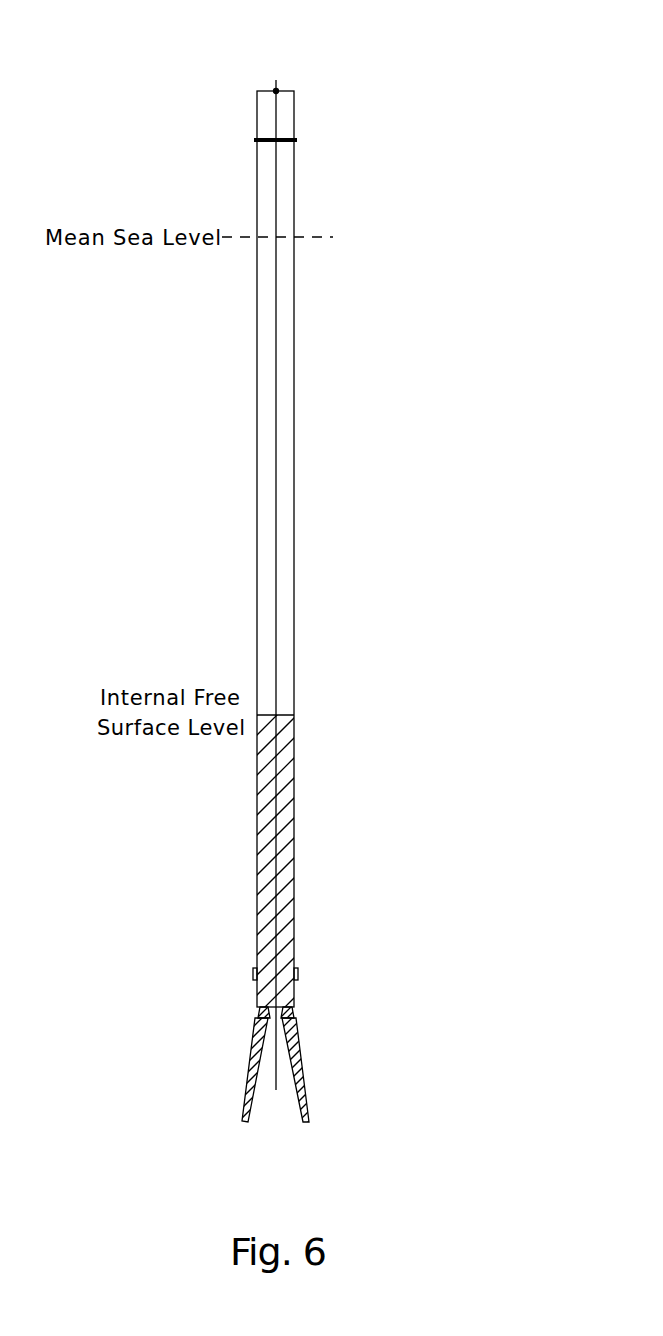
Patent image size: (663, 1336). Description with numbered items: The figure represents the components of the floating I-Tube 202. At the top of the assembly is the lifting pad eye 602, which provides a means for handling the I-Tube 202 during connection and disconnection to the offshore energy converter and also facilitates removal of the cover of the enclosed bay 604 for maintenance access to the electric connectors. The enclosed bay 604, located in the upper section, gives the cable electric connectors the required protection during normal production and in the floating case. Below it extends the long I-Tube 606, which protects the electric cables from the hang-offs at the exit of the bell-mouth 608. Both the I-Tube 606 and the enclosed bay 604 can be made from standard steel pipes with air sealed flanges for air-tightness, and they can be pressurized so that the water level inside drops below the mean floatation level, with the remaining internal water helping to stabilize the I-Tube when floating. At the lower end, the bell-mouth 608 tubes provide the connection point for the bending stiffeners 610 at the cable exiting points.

The floating I-Tube 202 is at (457, 85).
The lifting pad eye 602 is at (278, 90).
The enclosed bay 604 is at (294, 115).
The I-Tube 606 is at (306, 585).
The bell-mouth 608 is at (290, 1015).
The bending stiffener 610 is at (298, 1040).